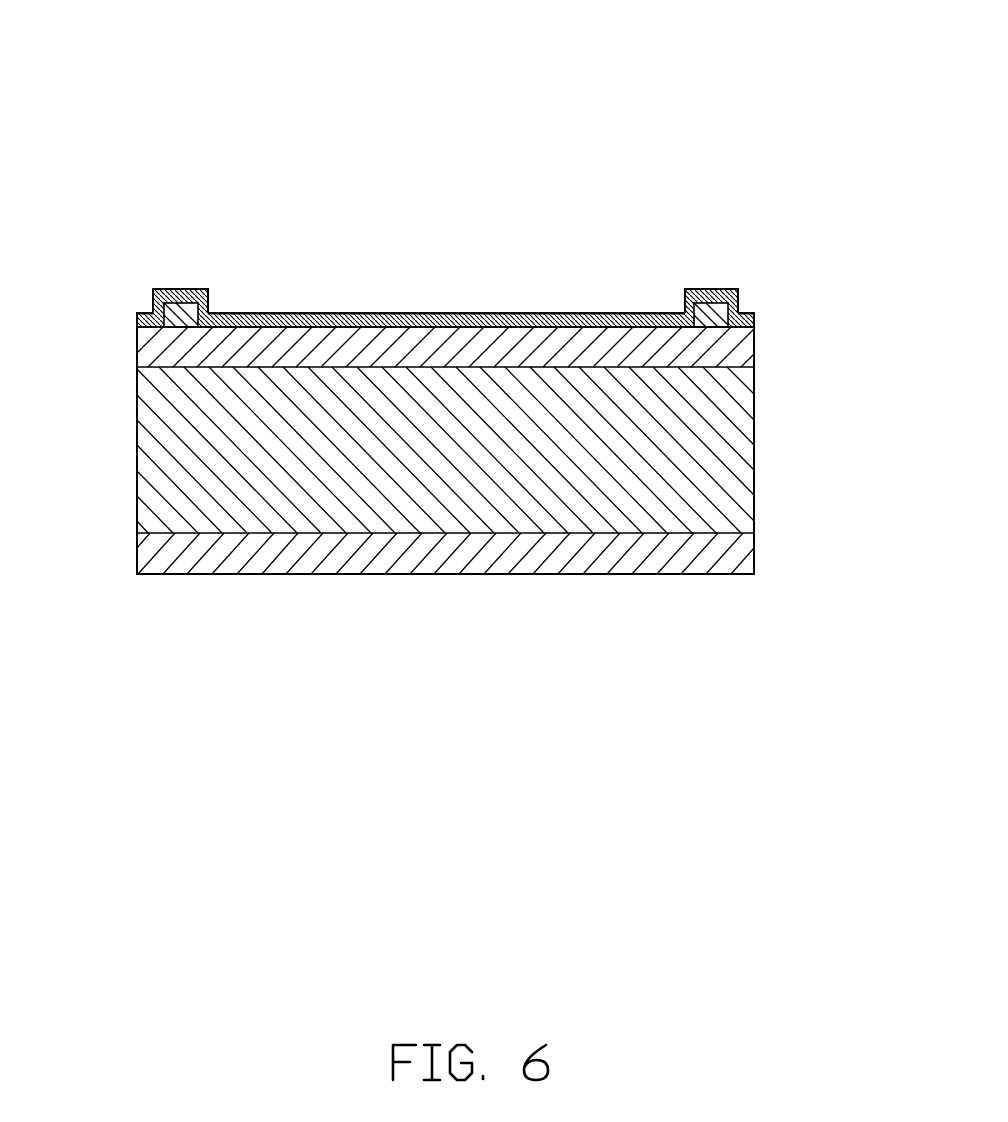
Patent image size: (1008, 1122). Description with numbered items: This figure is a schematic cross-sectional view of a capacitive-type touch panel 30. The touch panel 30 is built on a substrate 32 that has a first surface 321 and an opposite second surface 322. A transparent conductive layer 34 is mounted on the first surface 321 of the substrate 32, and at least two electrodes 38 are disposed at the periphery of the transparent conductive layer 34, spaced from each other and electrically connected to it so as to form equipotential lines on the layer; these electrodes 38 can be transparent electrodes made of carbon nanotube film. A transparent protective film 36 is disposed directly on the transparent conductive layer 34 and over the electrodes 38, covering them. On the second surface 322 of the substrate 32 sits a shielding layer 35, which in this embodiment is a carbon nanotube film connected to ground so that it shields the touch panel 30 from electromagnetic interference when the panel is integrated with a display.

The touch panel 30 is at (332, 65).
The substrate 32 is at (693, 468).
The first surface 321 is at (227, 365).
The second surface 322 is at (230, 532).
The transparent conductive layer 34 is at (720, 352).
The shielding layer 35 is at (595, 550).
The transparent protective film 36 is at (307, 318).
The electrodes 38 is at (175, 305).